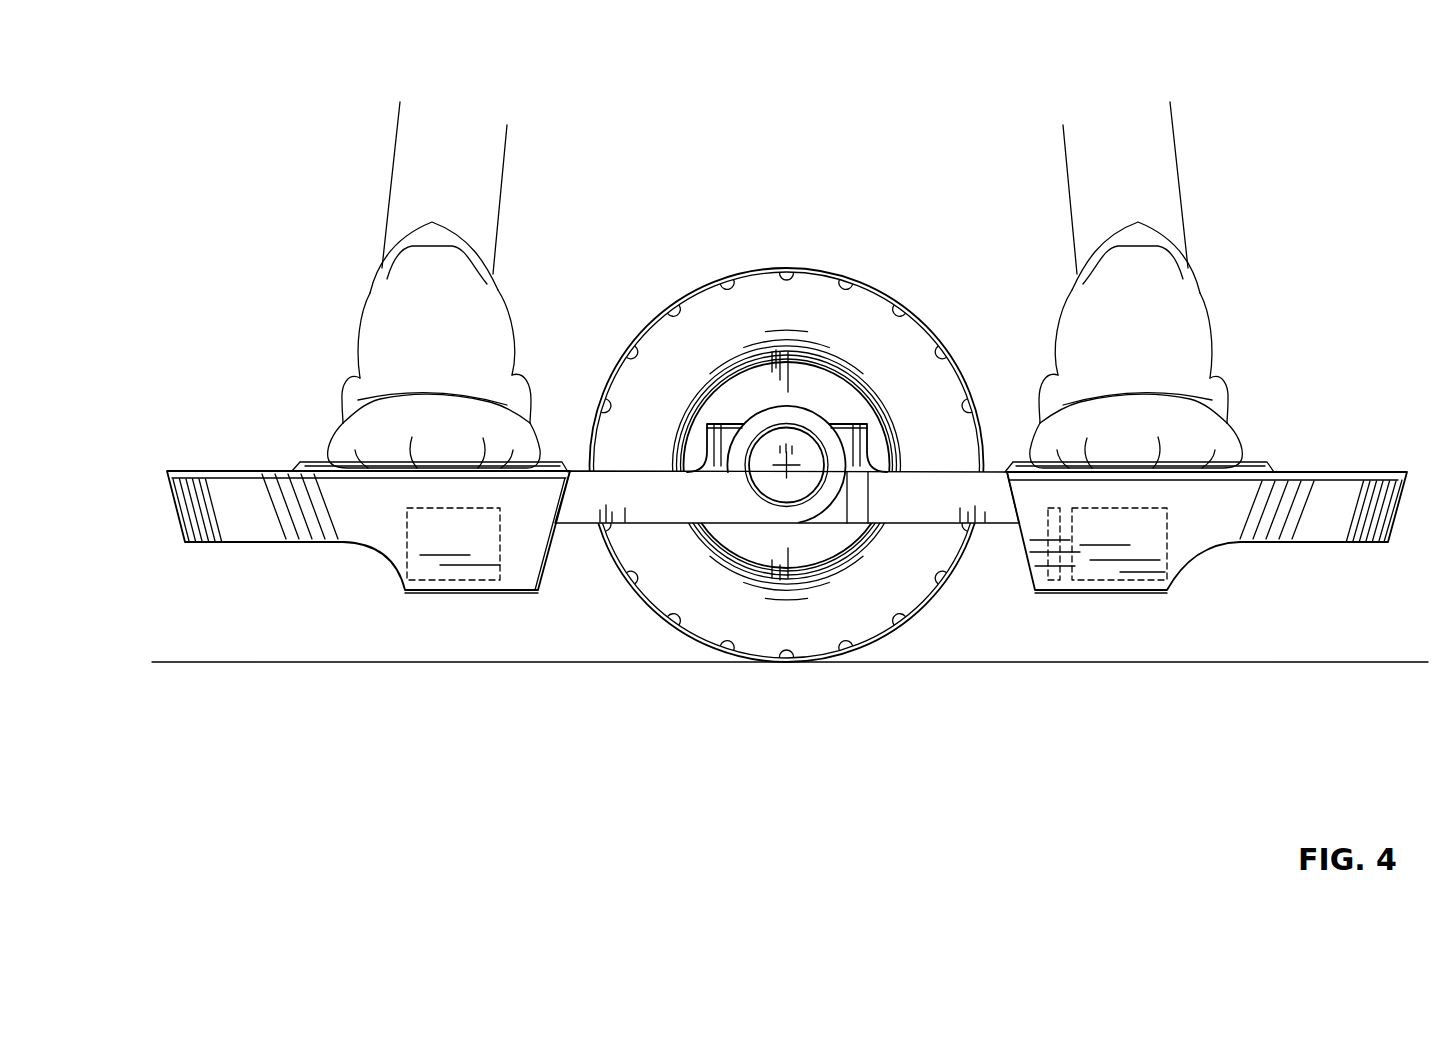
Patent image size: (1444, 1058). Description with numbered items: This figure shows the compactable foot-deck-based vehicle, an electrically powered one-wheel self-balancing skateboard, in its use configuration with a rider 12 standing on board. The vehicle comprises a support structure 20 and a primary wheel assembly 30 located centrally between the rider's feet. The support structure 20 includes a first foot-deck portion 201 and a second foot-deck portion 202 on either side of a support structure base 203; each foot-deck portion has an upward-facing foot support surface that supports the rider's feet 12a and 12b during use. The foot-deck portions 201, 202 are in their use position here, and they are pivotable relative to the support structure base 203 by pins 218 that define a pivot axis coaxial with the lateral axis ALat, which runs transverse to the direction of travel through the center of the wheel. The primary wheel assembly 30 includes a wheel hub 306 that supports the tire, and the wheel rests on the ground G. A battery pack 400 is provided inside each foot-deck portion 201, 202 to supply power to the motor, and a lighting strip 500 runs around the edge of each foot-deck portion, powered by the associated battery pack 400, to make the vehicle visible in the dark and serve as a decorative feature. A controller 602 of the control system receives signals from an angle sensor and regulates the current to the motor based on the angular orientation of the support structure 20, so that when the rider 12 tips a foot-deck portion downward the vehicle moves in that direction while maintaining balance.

The rider 12 is at (505, 158).
The foot of the rider 12a is at (512, 328).
The foot of the rider 12b is at (1218, 330).
The support structure 20 is at (1198, 610).
The primary wheel assembly 30 is at (767, 455).
The first foot-deck portion 201 is at (377, 502).
The second foot-deck portion 202 is at (1222, 527).
The support structure base 203 is at (1270, 462).
The pin 218 is at (761, 482).
The wheel hub 306 is at (823, 386).
The battery pack 400 is at (473, 580).
The lighting strip 500 is at (243, 470).
The controller 602 is at (1050, 513).
The ground G is at (205, 662).
The lateral axis ALat is at (792, 468).